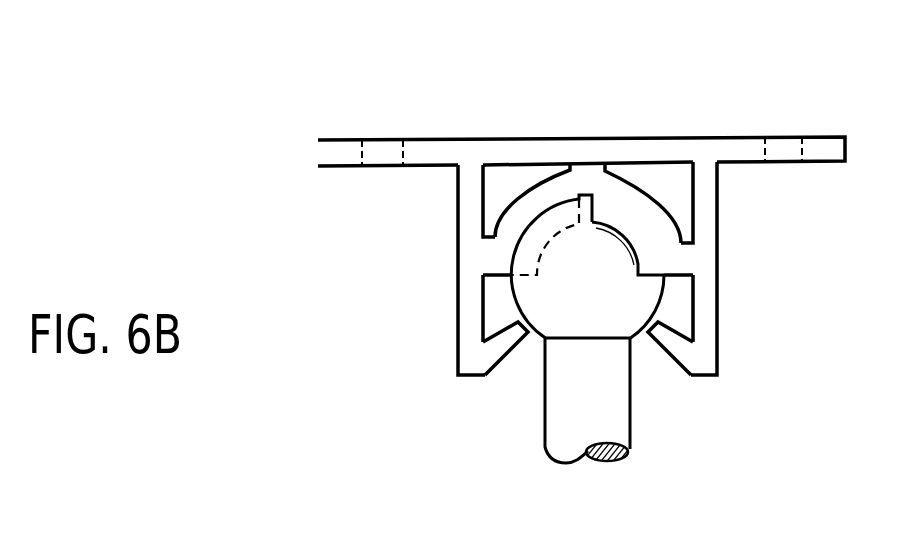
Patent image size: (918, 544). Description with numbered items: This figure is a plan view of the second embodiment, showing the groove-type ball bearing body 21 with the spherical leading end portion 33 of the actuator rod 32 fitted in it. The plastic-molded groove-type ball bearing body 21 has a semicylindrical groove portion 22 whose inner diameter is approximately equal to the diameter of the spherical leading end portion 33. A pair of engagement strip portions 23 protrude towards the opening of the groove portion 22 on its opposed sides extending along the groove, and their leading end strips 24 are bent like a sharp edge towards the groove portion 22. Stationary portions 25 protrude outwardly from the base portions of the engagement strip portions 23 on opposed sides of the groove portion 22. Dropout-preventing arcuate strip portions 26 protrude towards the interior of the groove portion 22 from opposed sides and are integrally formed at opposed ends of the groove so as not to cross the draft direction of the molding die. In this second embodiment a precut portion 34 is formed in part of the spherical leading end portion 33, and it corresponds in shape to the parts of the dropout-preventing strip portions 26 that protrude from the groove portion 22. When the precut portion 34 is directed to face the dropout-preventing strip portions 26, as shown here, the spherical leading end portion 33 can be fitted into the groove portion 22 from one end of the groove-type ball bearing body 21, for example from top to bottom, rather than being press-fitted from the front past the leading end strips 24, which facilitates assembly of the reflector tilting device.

The groove-type ball bearing body 21 is at (770, 118).
The semicylindrical groove portion 22 is at (520, 236).
The engagement strip portions 23 is at (458, 296).
The leading end strips 24 is at (507, 343).
The stationary portions 25 is at (338, 166).
The dropout-preventing arcuate strip portions 26 is at (548, 208).
The actuator rod 32 is at (607, 408).
The spherical leading end portion 33 is at (567, 313).
The precut portion 34 is at (638, 247).